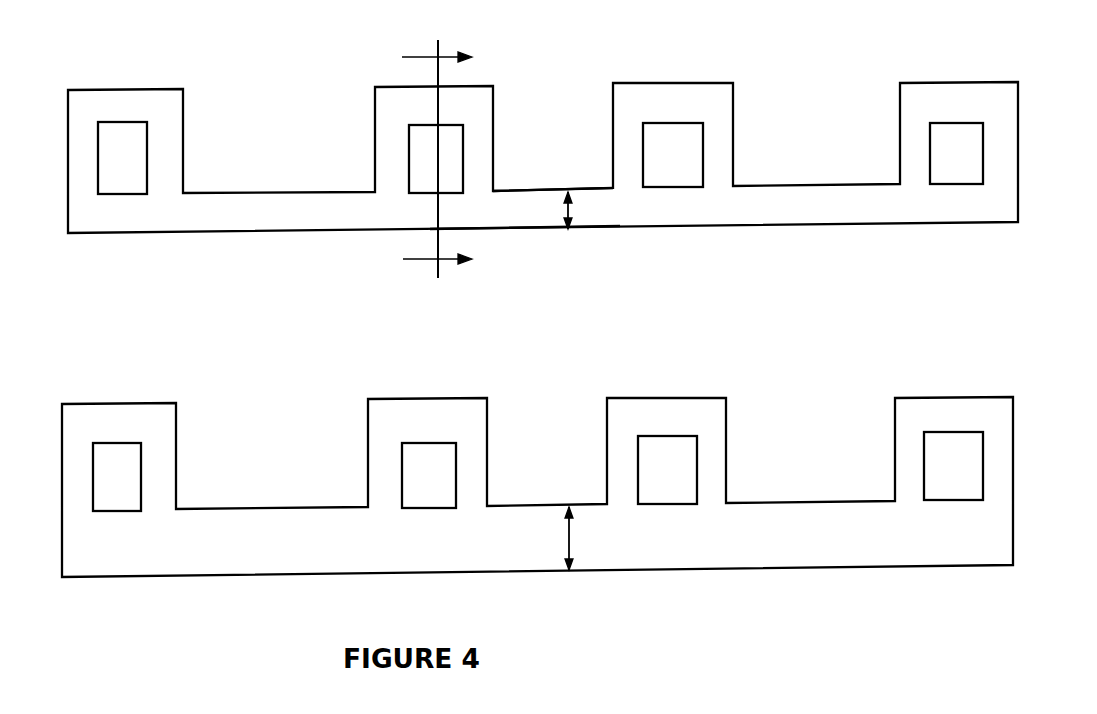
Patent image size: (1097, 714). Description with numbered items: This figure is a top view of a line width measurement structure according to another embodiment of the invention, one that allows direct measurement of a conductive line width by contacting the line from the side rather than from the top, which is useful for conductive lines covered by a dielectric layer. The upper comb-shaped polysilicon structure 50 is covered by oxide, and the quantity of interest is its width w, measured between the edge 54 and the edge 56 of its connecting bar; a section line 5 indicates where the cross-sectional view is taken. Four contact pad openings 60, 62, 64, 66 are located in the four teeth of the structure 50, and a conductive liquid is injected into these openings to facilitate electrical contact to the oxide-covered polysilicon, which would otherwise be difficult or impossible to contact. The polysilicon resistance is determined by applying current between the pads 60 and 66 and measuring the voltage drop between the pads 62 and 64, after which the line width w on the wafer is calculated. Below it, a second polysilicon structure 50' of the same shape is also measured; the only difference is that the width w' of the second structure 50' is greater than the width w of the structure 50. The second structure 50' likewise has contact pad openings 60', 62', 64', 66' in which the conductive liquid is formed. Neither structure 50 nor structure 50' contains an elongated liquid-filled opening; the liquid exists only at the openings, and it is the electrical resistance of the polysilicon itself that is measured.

The polysilicon structure 50 is at (543, 121).
The second polysilicon structure 50' is at (537, 445).
The edge 54 is at (523, 189).
The edge 56 is at (525, 230).
The contact pad opening 60 is at (166, 154).
The contact pad opening 62 is at (392, 154).
The contact pad opening 64 is at (715, 150).
The contact pad opening 66 is at (1005, 153).
The contact pad opening 60' is at (160, 466).
The contact pad opening 62' is at (384, 465).
The contact pad opening 64' is at (710, 463).
The contact pad opening 66' is at (999, 466).
The section line 5- 5 is at (445, 159).
The width w is at (589, 210).
The width w' is at (594, 538).